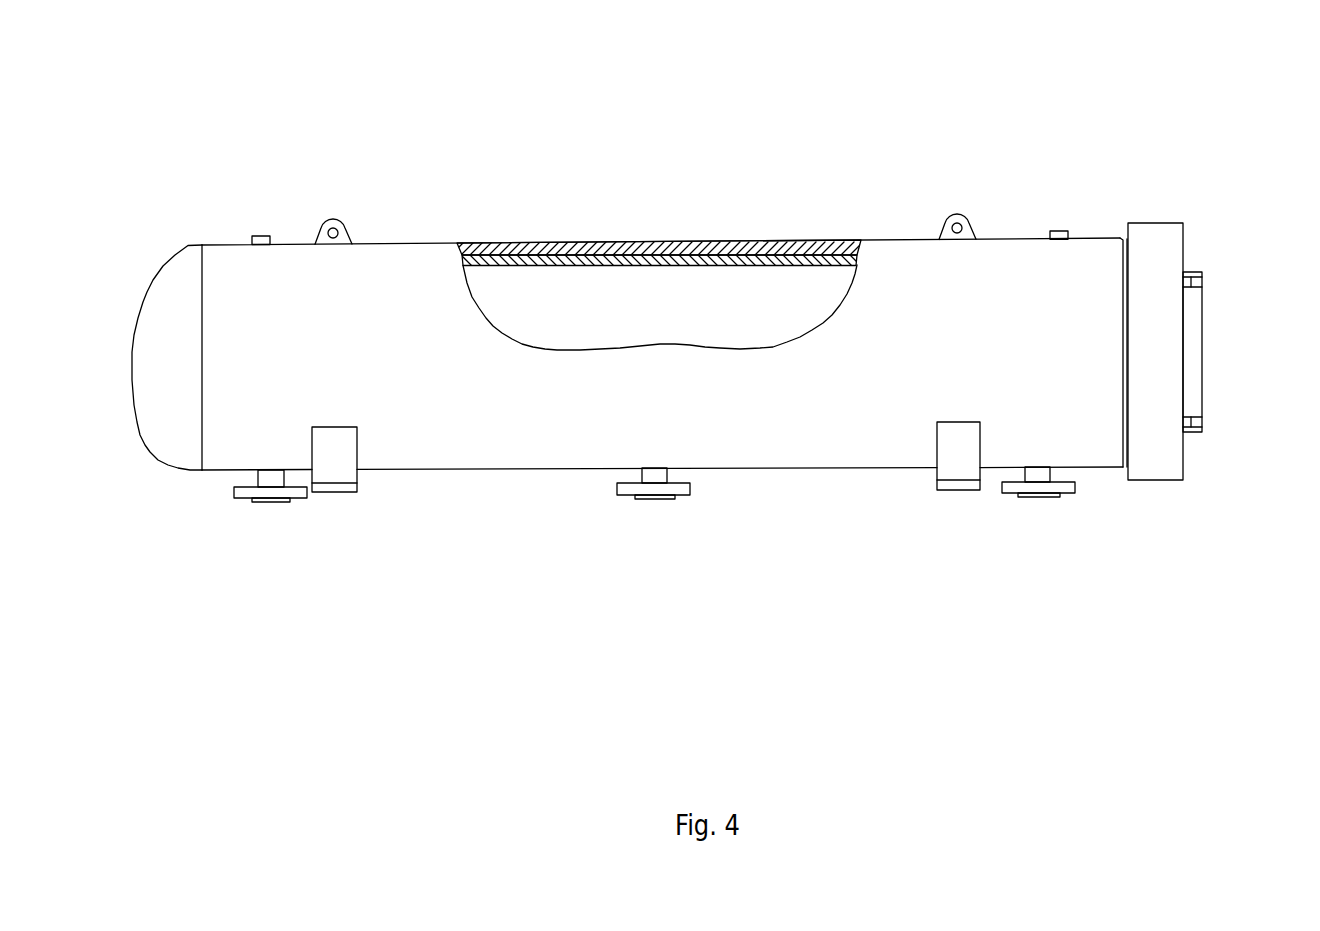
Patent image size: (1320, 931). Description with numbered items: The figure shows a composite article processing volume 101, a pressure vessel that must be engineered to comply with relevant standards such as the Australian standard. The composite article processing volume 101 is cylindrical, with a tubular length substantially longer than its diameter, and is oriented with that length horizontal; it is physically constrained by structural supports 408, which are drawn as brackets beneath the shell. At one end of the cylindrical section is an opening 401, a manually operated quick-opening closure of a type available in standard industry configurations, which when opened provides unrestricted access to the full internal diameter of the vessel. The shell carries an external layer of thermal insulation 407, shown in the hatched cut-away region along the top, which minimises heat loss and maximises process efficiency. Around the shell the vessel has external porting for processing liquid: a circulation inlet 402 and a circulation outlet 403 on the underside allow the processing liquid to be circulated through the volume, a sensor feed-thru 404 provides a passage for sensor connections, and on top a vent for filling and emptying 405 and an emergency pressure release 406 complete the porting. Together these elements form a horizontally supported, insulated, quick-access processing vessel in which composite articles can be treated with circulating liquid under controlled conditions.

The composite article processing volume 101 is at (519, 110).
The opening 401 is at (1183, 347).
The circulation inlet 402 is at (268, 502).
The circulation outlet 403 is at (1048, 498).
The sensor feed-thru 404 is at (652, 505).
The venting for filling and emptying 405 is at (1062, 231).
The emergency pressure release 406 is at (257, 236).
The thermal insulation 407 is at (650, 241).
The structural supports 408 is at (335, 495).